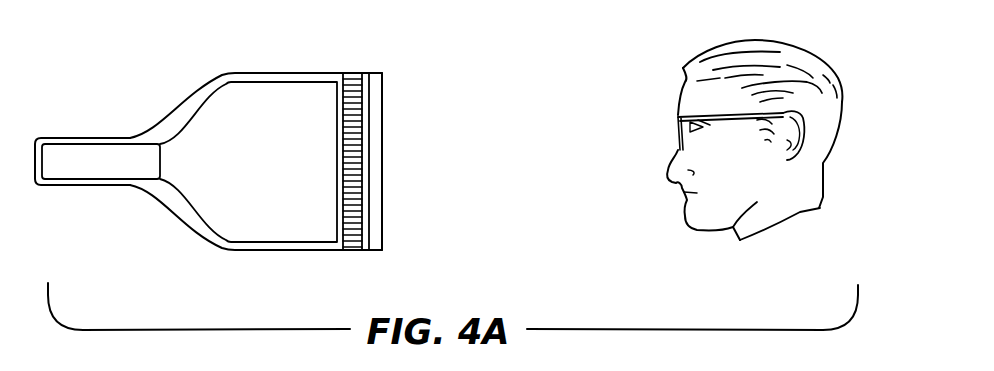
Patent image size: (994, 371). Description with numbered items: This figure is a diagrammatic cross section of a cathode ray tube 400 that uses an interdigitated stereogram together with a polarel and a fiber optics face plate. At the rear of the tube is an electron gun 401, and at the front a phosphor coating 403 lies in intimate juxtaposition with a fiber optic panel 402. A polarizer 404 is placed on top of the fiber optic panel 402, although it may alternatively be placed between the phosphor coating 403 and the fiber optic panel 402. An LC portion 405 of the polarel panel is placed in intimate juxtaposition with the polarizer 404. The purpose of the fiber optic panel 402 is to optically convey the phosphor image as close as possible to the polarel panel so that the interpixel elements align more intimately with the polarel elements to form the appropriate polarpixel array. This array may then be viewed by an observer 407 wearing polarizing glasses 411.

The cathode ray tube 400 is at (252, 151).
The electron gun 401 is at (55, 150).
The fiber optic panel 402 is at (352, 178).
The phosphor coating 403 is at (337, 180).
The polarizer 404 is at (369, 72).
The LC portion of the polarel panel 405 is at (384, 124).
The observer 407 is at (790, 218).
The polarizing glasses 411 is at (672, 136).